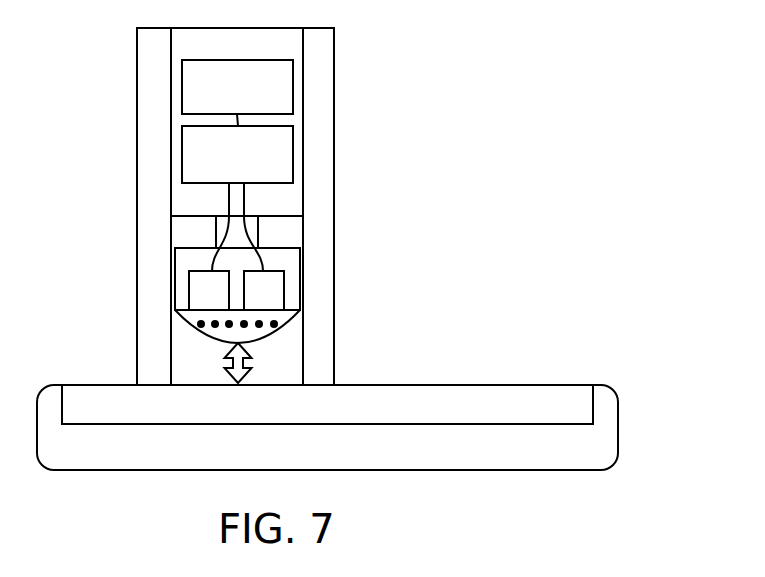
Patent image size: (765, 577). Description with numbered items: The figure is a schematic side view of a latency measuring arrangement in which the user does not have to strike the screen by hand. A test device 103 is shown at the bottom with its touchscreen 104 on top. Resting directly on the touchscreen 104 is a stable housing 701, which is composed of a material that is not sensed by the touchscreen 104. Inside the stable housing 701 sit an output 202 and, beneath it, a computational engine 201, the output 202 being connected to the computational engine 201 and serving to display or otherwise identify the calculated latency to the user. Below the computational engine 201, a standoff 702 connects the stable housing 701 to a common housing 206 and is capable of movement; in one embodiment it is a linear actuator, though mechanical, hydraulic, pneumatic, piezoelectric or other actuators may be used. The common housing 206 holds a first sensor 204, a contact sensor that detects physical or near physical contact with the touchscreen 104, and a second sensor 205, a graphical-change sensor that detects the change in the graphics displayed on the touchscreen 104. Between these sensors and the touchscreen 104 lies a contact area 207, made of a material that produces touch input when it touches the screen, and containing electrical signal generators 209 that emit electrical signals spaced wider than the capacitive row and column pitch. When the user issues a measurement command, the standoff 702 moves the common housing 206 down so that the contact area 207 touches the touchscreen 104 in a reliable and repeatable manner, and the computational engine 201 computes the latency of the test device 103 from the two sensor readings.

The stable housing 701 is at (137, 90).
The standoff 702 is at (217, 232).
The output 202 is at (237, 59).
The computational engine 201 is at (275, 184).
The common housing 206 is at (286, 247).
The second sensor 205 is at (189, 290).
The first sensor 204 is at (285, 290).
The contact area 207 is at (275, 338).
The electrical signal generators 209 is at (219, 336).
The test device 103 is at (280, 470).
The touchscreen 104 is at (500, 383).